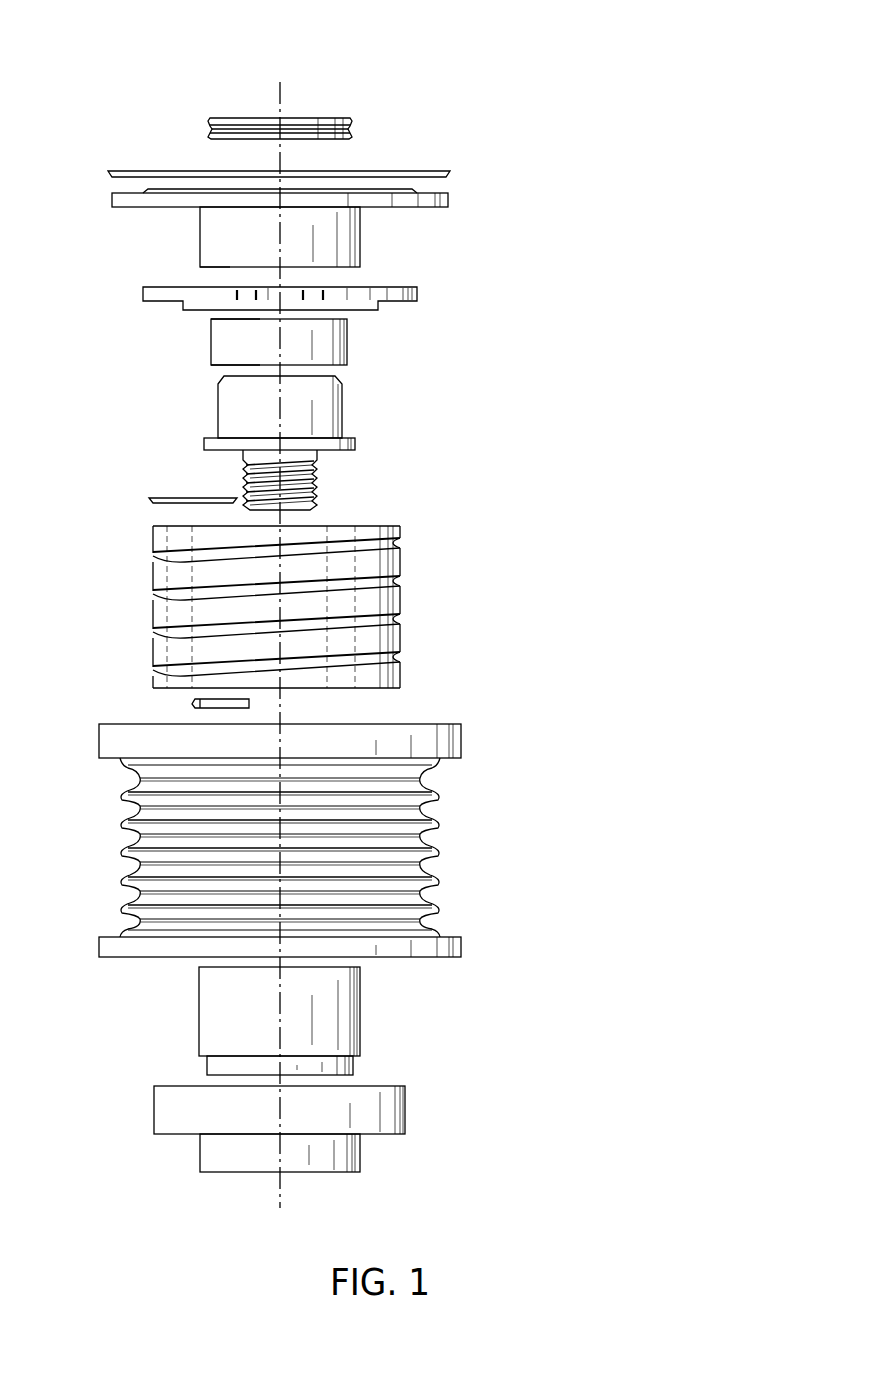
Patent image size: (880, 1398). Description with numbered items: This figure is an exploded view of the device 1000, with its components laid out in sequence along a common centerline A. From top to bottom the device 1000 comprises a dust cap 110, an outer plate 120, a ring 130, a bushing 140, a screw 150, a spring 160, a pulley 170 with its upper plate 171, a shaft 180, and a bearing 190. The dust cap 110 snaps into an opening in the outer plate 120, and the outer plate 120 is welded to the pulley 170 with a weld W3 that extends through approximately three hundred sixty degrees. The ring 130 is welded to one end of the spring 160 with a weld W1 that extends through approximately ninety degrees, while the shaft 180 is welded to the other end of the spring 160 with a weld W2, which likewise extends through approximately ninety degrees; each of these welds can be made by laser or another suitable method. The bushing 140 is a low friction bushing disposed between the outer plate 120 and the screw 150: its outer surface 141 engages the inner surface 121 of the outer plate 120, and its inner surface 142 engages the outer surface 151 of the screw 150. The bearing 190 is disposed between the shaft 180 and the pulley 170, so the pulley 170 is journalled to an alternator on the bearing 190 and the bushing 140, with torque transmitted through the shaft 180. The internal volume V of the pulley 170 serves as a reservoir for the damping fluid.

The device 1000 is at (212, 65).
The central axis A is at (279, 649).
The dust cap 110 is at (338, 118).
The weld W3 is at (128, 171).
The outer plate 120 is at (448, 200).
The inner surface 121 is at (215, 267).
The ring 130 is at (405, 287).
The bushing 140 is at (340, 340).
The outer surface 141 is at (220, 342).
The inner surface 142 is at (217, 367).
The screw 150 is at (334, 439).
The outer surface 151 is at (333, 395).
The weld W1 is at (149, 503).
The spring 160 is at (392, 597).
The weld W2 is at (192, 706).
The pulley 170 is at (324, 815).
The bellows top plate 171 is at (428, 724).
The pulley internal volume V is at (148, 966).
The shaft 180 is at (345, 1005).
The bearing 190 is at (390, 1115).